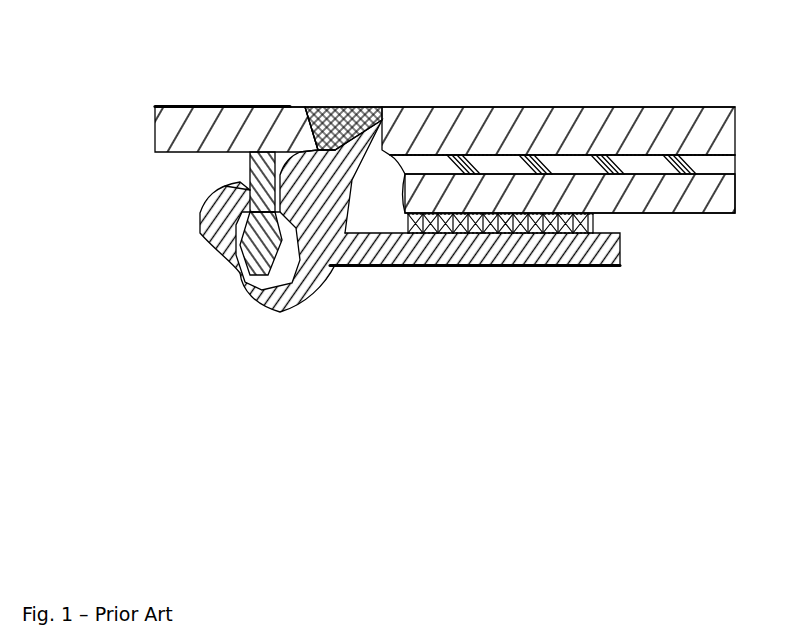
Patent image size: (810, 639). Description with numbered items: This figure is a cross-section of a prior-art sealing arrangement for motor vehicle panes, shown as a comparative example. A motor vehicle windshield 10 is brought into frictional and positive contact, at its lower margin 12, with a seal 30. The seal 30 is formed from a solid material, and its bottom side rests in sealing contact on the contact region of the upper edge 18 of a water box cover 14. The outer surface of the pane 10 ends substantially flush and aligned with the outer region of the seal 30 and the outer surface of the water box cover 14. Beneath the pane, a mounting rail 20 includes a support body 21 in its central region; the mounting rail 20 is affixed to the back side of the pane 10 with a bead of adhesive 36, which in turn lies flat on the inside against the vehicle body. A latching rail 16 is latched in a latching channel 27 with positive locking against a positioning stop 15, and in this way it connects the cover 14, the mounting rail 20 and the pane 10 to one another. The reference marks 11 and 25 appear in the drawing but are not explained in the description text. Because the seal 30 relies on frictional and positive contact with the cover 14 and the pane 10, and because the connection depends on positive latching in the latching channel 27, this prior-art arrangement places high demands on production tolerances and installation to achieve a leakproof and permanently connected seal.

The motor vehicle windshield 10 is at (532, 95).
The joint interface 11 is at (320, 107).
The lower margin 12 is at (405, 106).
The water box cover 14 is at (213, 98).
The positioning stop 15 is at (237, 205).
The latching rail 16 is at (258, 182).
The upper edge 18 is at (313, 135).
The mounting rail 20 is at (465, 272).
The support body 21 is at (327, 185).
The seal 25 is at (222, 245).
The latching channel 27 is at (275, 277).
The seal 30 is at (350, 107).
The bead of adhesive 36 is at (540, 218).